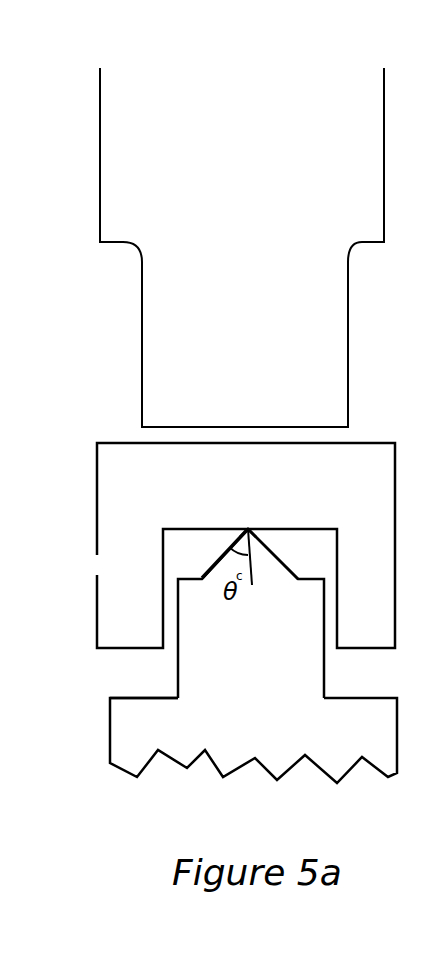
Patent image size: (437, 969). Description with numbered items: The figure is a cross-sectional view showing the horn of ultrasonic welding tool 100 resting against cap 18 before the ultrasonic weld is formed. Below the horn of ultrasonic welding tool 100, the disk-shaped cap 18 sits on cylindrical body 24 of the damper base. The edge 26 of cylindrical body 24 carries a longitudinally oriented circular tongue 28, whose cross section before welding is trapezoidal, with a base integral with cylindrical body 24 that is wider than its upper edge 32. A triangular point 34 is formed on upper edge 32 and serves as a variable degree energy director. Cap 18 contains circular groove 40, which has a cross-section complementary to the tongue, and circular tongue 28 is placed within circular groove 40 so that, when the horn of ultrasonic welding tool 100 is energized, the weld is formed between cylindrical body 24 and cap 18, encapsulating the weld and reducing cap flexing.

The horn of ultrasonic welding tool 100 is at (167, 254).
The cap 18 is at (113, 530).
The circular tongue 28 is at (263, 662).
The upper edge 32 is at (203, 567).
The triangular point 34 is at (280, 550).
The circular groove 40 is at (197, 527).
The cylindrical body 24 is at (110, 737).
The edge 26 is at (148, 697).